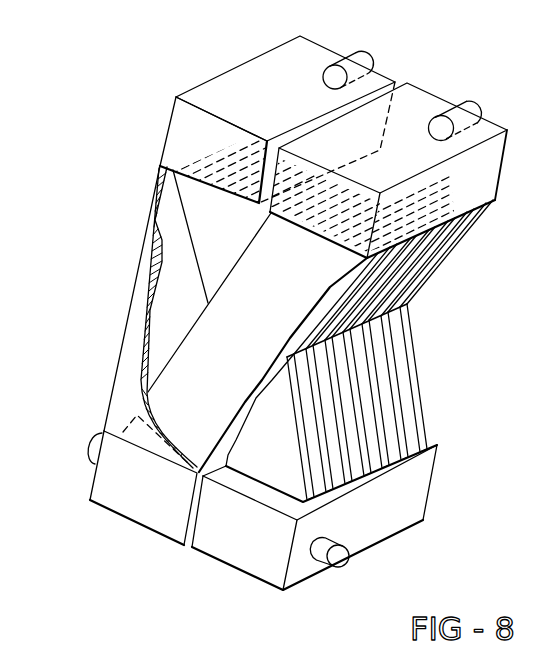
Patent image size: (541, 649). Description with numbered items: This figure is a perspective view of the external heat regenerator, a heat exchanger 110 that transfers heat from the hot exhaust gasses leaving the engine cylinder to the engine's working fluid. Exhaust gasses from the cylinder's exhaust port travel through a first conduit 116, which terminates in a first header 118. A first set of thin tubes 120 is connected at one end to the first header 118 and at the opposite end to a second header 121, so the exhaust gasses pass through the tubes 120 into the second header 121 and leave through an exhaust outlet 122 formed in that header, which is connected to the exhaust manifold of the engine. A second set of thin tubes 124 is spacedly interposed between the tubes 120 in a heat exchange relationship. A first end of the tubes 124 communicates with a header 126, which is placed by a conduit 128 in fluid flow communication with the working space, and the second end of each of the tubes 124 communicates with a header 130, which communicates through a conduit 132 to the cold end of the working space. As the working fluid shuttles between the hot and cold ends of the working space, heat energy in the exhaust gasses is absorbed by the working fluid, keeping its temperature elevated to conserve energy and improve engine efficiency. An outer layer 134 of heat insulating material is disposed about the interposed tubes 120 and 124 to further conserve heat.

The heat exchanger 110 is at (98, 104).
The first conduit 116 is at (472, 103).
The first header 118 is at (418, 91).
The first set of thin tubes 120 is at (202, 343).
The second header 121 is at (140, 507).
The exhaust outlet 122 is at (96, 443).
The second set of thin tubes 124 is at (365, 426).
The header 126 is at (233, 80).
The conduit 128 is at (345, 58).
The header 130 is at (427, 498).
The conduit 132 is at (323, 570).
The outer layer 134 is at (142, 272).